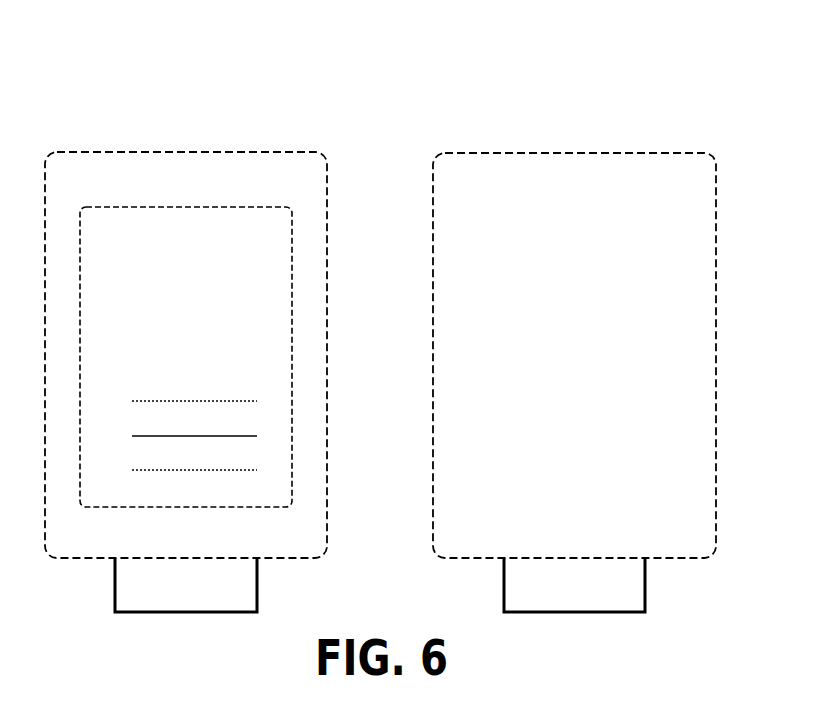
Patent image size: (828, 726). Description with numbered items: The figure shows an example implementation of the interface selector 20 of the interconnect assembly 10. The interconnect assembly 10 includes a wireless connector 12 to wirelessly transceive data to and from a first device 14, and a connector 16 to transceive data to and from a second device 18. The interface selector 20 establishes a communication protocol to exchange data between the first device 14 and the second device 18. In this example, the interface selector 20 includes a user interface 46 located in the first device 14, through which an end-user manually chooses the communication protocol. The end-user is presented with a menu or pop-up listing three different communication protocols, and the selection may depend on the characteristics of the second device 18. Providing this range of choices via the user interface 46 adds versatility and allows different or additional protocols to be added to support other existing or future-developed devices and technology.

The interconnect assembly 10 is at (574, 316).
The wireless connector 12 is at (258, 586).
The first device 14 is at (188, 150).
The connector 16 is at (646, 587).
The second device 18 is at (577, 150).
The interface selector 20 is at (306, 251).
The user interface 46 is at (213, 206).